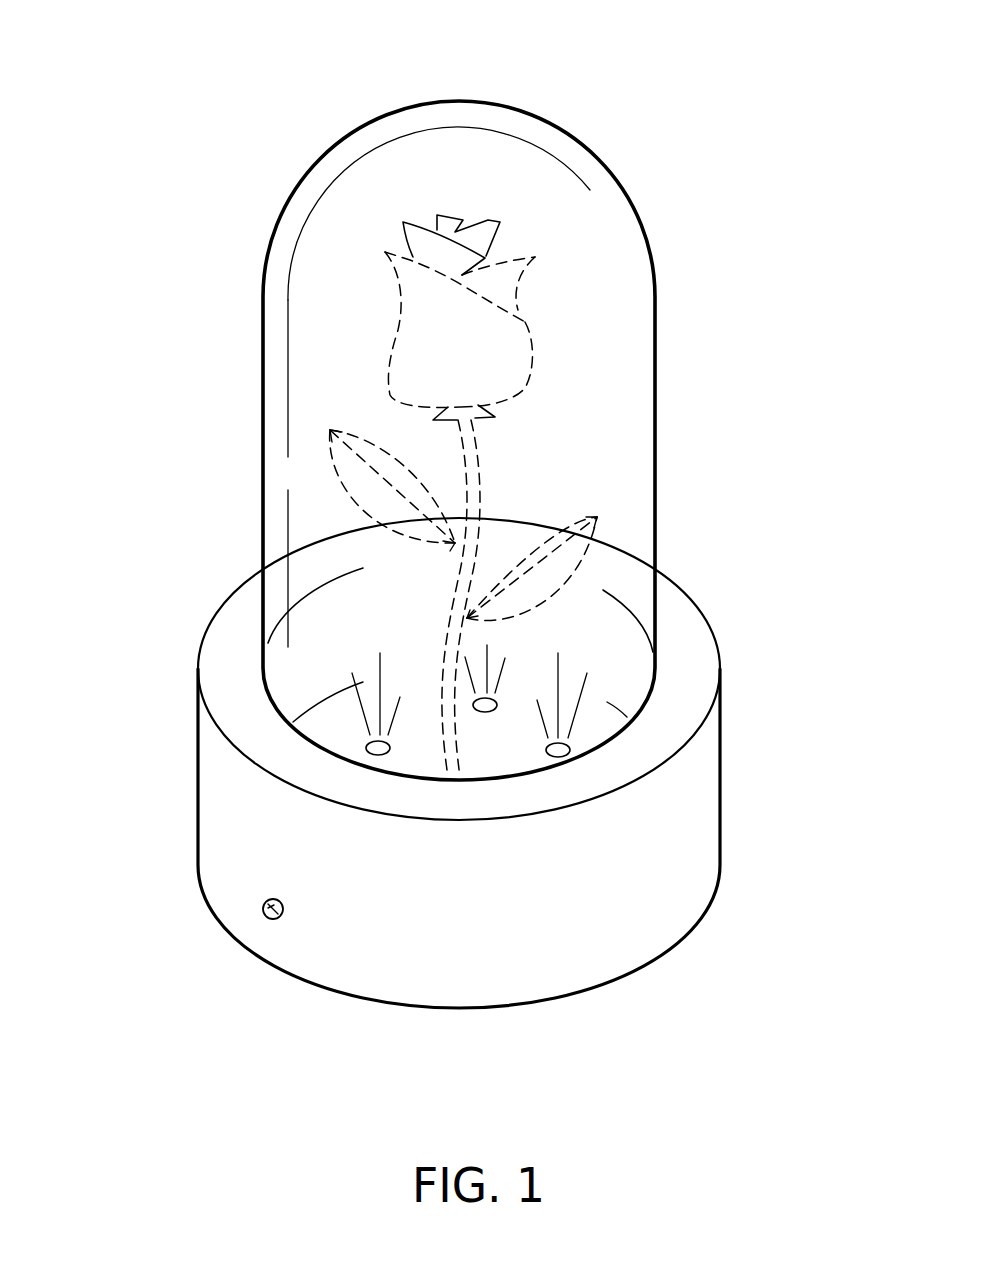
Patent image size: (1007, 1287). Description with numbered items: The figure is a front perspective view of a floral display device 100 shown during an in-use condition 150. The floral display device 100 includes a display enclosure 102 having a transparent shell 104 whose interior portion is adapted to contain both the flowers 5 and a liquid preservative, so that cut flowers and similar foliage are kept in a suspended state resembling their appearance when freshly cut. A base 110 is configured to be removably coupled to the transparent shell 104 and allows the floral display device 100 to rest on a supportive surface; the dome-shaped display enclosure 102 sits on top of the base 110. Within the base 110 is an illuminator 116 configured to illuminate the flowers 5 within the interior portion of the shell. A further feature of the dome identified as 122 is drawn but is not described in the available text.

The floral display device 100 is at (180, 66).
The in-use condition 150 is at (179, 129).
The display enclosure 102 is at (664, 79).
The transparent shell 104 is at (655, 275).
The inner surface of dome 122 is at (617, 177).
The base 110 is at (643, 963).
The illuminator 116 is at (557, 750).
The flowers 5 is at (531, 342).